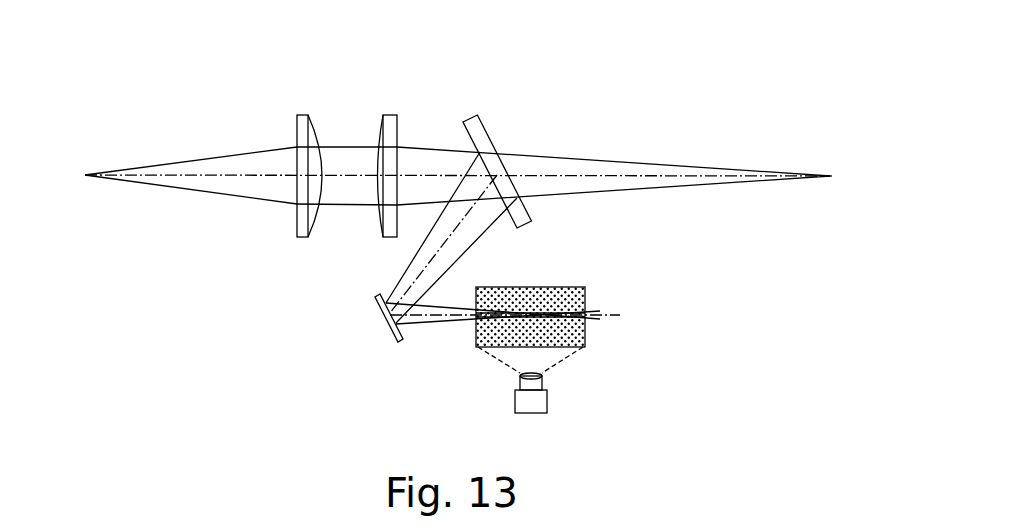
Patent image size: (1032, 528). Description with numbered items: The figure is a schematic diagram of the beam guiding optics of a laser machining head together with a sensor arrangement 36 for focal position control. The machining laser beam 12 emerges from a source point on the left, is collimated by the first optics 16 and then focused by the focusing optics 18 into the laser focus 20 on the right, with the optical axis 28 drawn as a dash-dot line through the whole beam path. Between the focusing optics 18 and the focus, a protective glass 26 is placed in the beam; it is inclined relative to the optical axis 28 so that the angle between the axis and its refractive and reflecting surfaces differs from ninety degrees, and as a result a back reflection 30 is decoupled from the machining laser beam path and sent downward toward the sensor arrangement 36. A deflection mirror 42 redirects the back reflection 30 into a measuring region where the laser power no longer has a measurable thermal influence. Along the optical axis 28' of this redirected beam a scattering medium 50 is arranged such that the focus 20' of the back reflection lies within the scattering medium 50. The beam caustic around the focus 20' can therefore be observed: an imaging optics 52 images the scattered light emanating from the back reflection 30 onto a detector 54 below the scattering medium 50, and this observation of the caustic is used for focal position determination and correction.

The machining laser beam 12 is at (98, 172).
The first optics 16 is at (303, 115).
The focusing optics 18 is at (390, 115).
The laser focus 20 is at (854, 134).
The protective glass 26 is at (472, 118).
The optical axis 28 is at (613, 148).
The back reflection 30 is at (423, 248).
The sensor arrangement 36 is at (512, 261).
The deflection mirror 42 is at (385, 323).
The optical axis of the back reflection 28' is at (503, 356).
The focus of the back reflection 20' is at (533, 272).
The scattering medium 50 is at (585, 337).
The imaging optics 52 is at (542, 377).
The detector 54 is at (523, 403).